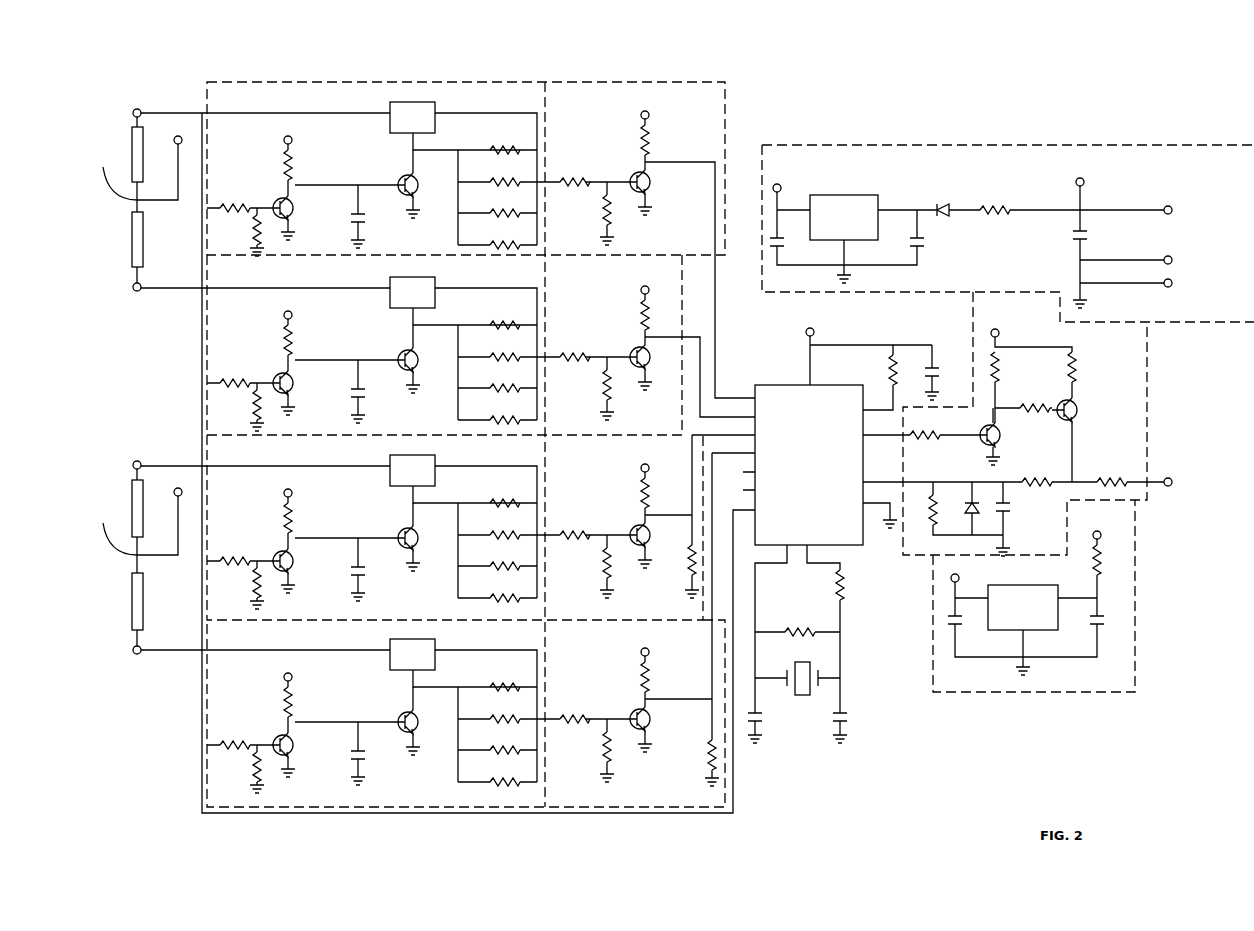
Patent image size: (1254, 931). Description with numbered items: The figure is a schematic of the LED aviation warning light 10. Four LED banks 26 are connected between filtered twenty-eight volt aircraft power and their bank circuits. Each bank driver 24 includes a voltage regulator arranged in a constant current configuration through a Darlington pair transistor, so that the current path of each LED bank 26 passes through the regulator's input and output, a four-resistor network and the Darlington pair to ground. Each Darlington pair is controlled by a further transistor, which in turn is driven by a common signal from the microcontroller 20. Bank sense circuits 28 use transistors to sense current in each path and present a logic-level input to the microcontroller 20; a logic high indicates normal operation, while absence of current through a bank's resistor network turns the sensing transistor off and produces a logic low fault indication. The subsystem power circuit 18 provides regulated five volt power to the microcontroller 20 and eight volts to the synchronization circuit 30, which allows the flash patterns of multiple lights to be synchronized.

The LED aviation warning light 10 is at (1186, 70).
The subsystem power circuit 18 is at (958, 162).
The microcontroller 20 is at (790, 390).
The bank driver 24 is at (355, 145).
The LED bank 26 is at (130, 602).
The bank sense circuit 28 is at (585, 132).
The synchronization circuit 30 is at (1125, 407).